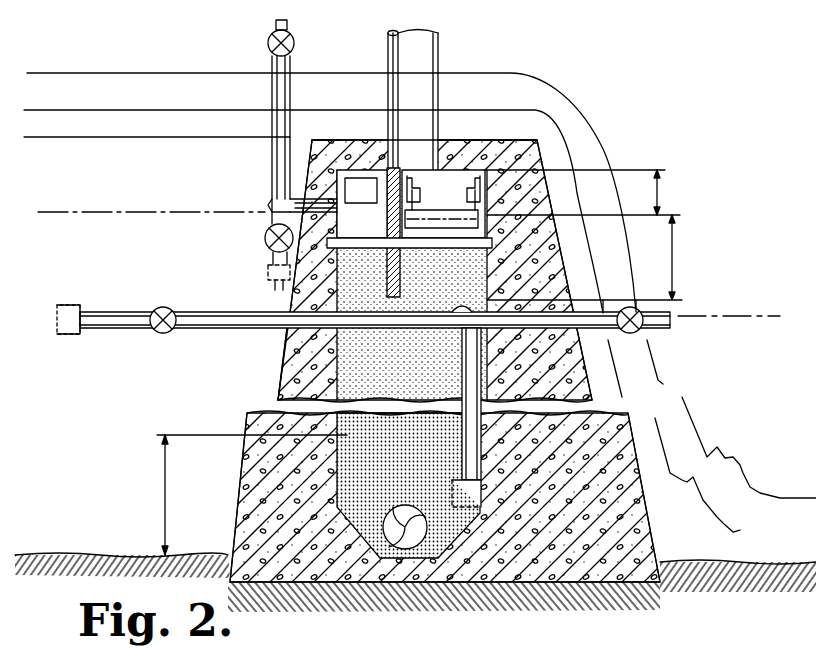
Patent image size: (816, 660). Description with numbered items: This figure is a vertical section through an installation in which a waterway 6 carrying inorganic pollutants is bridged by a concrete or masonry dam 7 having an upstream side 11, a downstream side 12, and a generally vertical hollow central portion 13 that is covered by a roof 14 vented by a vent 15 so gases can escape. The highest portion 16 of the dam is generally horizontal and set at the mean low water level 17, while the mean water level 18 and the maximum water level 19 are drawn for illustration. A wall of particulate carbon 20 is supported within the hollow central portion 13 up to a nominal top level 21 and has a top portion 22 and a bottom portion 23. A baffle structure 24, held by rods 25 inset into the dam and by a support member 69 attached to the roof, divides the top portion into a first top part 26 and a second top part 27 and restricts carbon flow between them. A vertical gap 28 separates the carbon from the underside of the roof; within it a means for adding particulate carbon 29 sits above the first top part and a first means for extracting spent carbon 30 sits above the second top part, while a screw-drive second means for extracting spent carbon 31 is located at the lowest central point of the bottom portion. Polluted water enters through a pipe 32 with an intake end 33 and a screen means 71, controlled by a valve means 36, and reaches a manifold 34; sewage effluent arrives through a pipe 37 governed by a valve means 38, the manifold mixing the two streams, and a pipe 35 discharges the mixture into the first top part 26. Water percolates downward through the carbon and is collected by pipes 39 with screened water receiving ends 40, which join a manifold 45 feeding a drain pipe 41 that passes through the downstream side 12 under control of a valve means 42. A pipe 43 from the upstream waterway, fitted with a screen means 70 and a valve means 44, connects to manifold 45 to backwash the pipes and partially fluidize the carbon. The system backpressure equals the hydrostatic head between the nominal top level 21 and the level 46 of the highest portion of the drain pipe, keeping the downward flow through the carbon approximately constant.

The waterway 6 is at (95, 234).
The dam 7 is at (503, 147).
The upstream side 11 is at (286, 369).
The downstream side 12 is at (550, 270).
The hollow central portion 13 is at (343, 359).
The roof 14 is at (443, 146).
The vent 15 is at (438, 50).
The highest portion 16 is at (313, 140).
The mean low water level 17 is at (176, 137).
The mean water level 18 is at (176, 110).
The maximum water level 19 is at (176, 73).
The wall of particulate carbon 20 is at (389, 379).
The nominal top level 21 is at (681, 216).
The top portion 22 is at (682, 266).
The bottom portion 23 is at (165, 500).
The baffle structure 24 is at (403, 167).
The rods 25 is at (369, 249).
The first top part 26 is at (371, 234).
The second top part 27 is at (456, 246).
The vertical gap 28 is at (665, 189).
The means for adding particulate carbon 29 is at (347, 175).
The first means for extracting spent carbon 30 is at (470, 200).
The second means for extracting spent carbon 31 is at (383, 530).
The pipe 32 is at (271, 262).
The intake end 33 is at (282, 282).
The manifold 34 is at (268, 205).
The pipe 35 is at (302, 199).
The valve means 36 is at (265, 239).
The pipe 37 is at (272, 169).
The valve means 38 is at (268, 45).
The pipes 39 is at (462, 340).
The screened water receiving ends 40 is at (483, 493).
The drain pipe 41 is at (601, 302).
The valve means 42 is at (626, 333).
The pipe 43 is at (229, 329).
The valve means 44 is at (163, 333).
The manifold 45 is at (462, 310).
The level 46 is at (745, 316).
The support member 69 is at (391, 160).
The screen means 70 is at (69, 334).
The screen means 71 is at (268, 278).